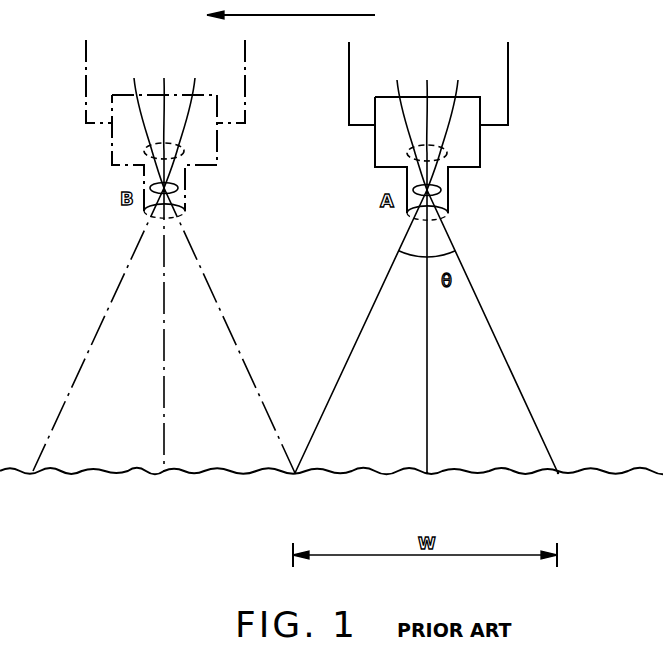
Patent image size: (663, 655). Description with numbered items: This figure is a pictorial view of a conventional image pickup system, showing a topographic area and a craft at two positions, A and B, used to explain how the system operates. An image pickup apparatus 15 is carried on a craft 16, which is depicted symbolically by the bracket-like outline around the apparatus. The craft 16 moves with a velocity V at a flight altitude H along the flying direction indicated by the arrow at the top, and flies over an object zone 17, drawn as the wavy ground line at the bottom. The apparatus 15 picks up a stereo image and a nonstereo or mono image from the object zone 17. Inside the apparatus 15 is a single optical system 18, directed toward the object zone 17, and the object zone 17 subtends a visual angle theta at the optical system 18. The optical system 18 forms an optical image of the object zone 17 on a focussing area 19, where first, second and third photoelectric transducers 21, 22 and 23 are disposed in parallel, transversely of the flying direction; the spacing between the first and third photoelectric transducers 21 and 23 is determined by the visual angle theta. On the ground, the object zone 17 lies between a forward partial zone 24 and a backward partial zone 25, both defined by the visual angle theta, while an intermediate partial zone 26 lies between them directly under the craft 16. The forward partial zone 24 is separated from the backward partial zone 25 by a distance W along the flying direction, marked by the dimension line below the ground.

The image pickup apparatus 15 is at (480, 150).
The craft 16 is at (508, 84).
The object zone 17 is at (462, 472).
The optical system 18 is at (441, 188).
The focussing area 19 is at (407, 153).
The first photoelectric transducer 21 is at (319, 124).
The second photoelectric transducer 22 is at (296, 124).
The third photoelectric transducer 23 is at (273, 124).
The forward partial zone 24 is at (293, 489).
The backward partial zone 25 is at (558, 489).
The intermediate partial zone 26 is at (427, 489).